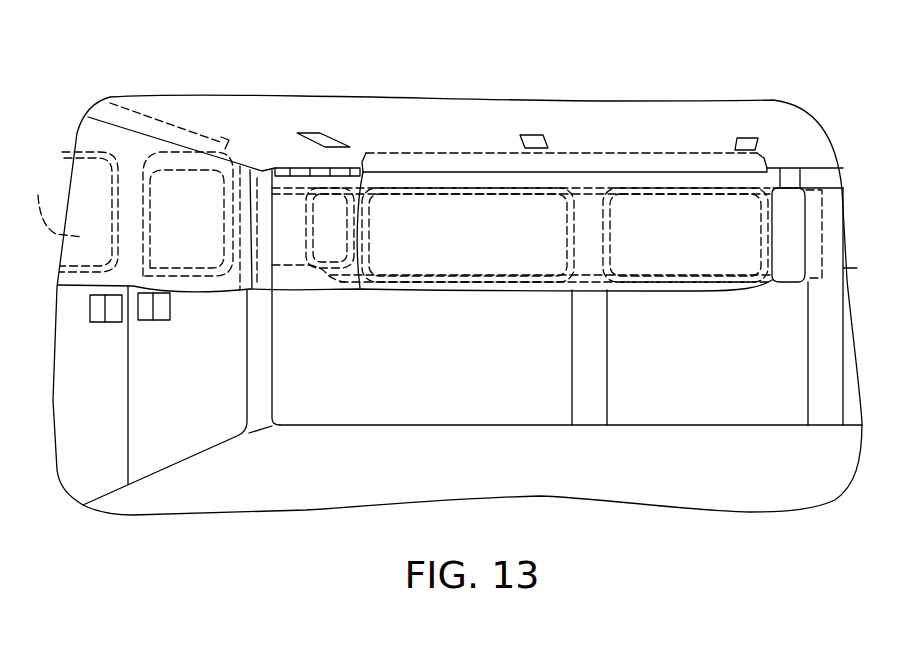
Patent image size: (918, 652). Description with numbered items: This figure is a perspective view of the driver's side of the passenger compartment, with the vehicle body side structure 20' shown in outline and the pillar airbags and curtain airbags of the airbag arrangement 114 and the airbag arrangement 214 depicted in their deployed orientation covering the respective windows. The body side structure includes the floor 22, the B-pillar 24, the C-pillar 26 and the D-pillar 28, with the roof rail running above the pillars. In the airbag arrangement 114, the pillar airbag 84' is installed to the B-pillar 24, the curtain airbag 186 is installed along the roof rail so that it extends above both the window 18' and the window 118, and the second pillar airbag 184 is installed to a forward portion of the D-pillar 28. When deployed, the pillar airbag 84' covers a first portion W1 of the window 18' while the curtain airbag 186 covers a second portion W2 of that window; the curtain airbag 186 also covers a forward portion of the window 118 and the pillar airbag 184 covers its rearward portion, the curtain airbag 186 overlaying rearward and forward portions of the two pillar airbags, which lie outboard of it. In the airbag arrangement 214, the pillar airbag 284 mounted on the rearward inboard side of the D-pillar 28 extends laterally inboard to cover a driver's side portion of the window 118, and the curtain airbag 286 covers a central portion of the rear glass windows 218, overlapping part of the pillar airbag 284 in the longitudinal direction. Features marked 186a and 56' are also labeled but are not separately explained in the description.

The vehicle body 20' is at (460, 287).
The airbag arrangement 214 is at (93, 56).
The curtain airbag 286 is at (128, 152).
The pillar airbag 284 is at (195, 163).
The rear glass windows 218 is at (175, 210).
The airbag arrangement 114 is at (268, 57).
The pillar airbag 84' is at (752, 139).
The window 118 is at (413, 243).
The pillar airbag 184 is at (333, 213).
The window pillar 186a is at (350, 255).
The curtain airbag 186 is at (487, 213).
The window 18' is at (685, 261).
The side panel 56' is at (795, 264).
The D-pillar 28 is at (260, 360).
The C-pillar 26 is at (587, 360).
The B-pillar 24 is at (827, 352).
The floor 22 is at (652, 463).
The first portion of the window W1 is at (222, 243).
The second portion of the window W2 is at (175, 243).